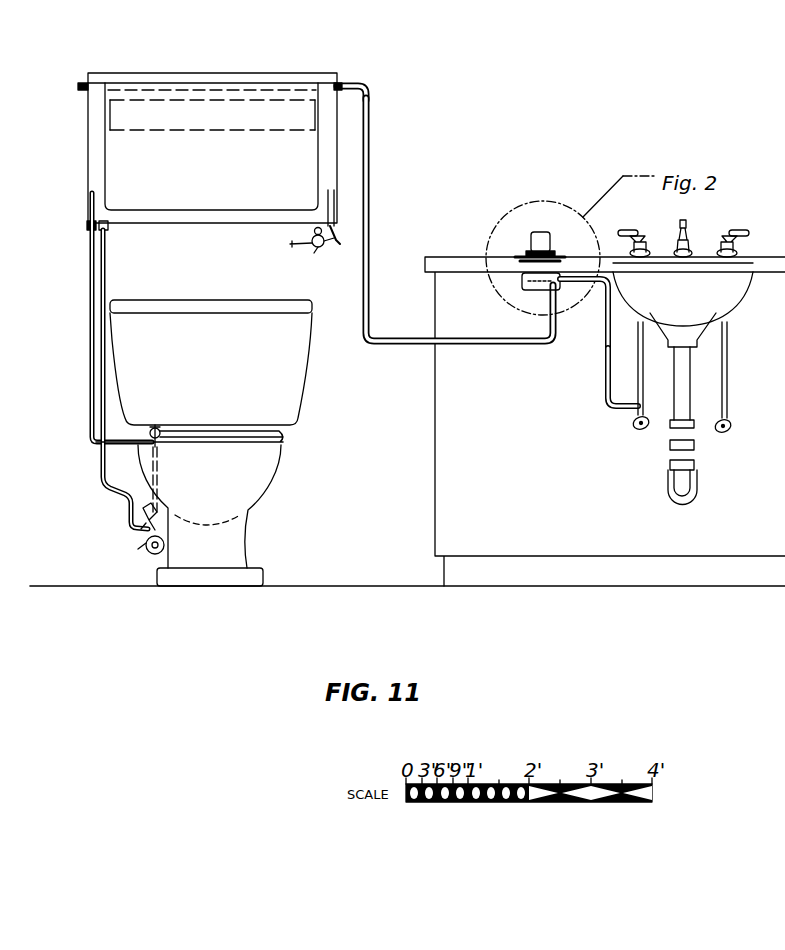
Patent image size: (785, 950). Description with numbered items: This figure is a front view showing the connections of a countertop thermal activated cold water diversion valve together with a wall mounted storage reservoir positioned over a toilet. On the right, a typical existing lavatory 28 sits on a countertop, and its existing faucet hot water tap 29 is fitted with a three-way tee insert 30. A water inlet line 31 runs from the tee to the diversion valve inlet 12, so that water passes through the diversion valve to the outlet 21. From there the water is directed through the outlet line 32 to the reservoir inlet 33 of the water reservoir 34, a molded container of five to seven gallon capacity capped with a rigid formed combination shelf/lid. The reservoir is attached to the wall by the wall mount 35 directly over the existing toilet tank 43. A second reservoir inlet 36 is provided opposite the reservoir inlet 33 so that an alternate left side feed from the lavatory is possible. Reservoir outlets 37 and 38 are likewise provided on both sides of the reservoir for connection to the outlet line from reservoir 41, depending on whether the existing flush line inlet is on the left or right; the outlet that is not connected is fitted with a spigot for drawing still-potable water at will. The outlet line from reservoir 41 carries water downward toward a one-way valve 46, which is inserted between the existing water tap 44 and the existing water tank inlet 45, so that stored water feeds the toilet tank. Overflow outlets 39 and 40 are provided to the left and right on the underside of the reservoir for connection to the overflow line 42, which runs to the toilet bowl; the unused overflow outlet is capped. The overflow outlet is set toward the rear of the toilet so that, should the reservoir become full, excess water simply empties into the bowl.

The diversion valve inlet 12 is at (567, 287).
The outlet 21 is at (541, 294).
The existing lavatory 28 is at (698, 309).
The hot water tap 29 is at (639, 436).
The three-way tee insert 30 is at (633, 416).
The water inlet line 31 is at (601, 391).
The outlet line 32 is at (368, 203).
The reservoir inlet 33 is at (343, 86).
The water reservoir 34 is at (236, 170).
The wall mount 35 is at (212, 99).
The reservoir inlet 36 is at (81, 92).
The reservoir outlet 37 is at (111, 230).
The reservoir outlet 38 is at (296, 245).
The overflow outlet 39 is at (85, 222).
The overflow outlet 40 is at (334, 236).
The outlet line from reservoir 41 is at (108, 278).
The overflow line 42 is at (89, 284).
The existing toilet tank 43 is at (218, 376).
The existing water tap 44 is at (143, 547).
The existing water tank inlet 45 is at (147, 436).
The one-way valve 46 is at (146, 515).